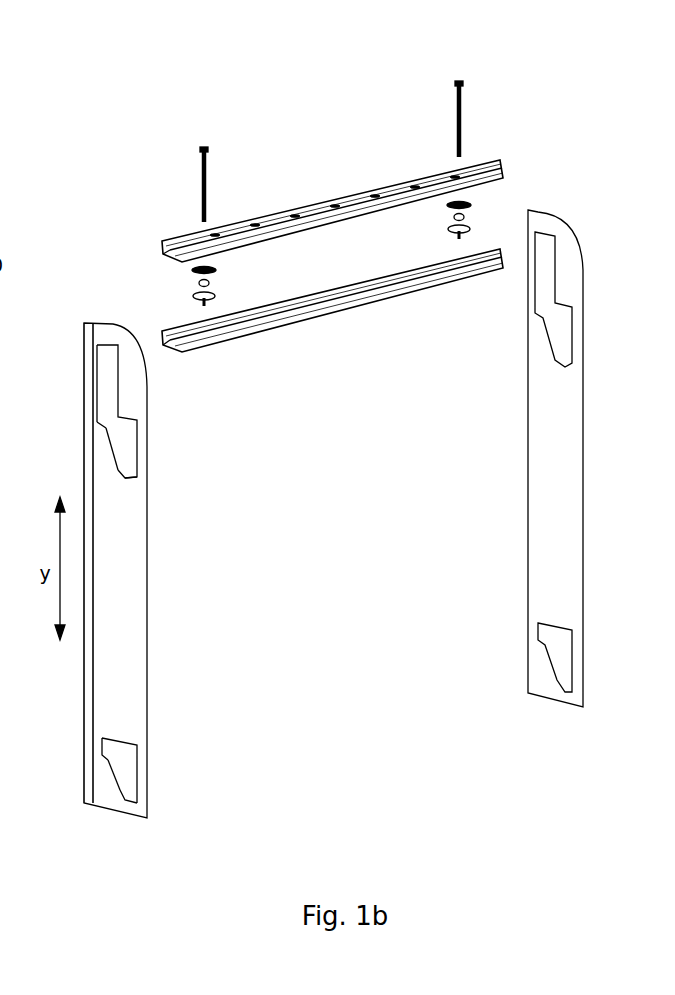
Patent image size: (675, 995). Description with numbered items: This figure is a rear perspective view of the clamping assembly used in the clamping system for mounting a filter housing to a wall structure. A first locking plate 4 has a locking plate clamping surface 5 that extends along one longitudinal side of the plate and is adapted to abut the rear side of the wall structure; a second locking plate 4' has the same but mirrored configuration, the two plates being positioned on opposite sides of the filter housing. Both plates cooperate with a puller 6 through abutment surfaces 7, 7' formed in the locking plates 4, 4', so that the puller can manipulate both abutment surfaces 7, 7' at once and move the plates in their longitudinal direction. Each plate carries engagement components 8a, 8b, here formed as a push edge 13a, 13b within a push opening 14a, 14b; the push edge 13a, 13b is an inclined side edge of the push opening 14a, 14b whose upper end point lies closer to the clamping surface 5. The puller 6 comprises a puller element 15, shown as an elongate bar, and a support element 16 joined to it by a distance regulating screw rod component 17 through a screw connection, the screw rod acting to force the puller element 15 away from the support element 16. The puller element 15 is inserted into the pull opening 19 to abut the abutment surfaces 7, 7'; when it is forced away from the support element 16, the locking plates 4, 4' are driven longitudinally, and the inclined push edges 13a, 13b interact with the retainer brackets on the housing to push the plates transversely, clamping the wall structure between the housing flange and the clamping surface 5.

The first locking plate 4 is at (154, 570).
The second locking plate 4' is at (591, 450).
The locking plate clamping surface 5 is at (78, 731).
The puller 6 is at (134, 284).
The abutment surface 7 is at (160, 411).
The abutment surface 7' is at (574, 280).
The engagement component 8a is at (122, 467).
The engagement component 8b is at (118, 785).
The push edge 13a is at (110, 446).
The push edge 13b is at (115, 768).
The push opening 14a is at (120, 438).
The push opening 14b is at (123, 760).
The puller element 15 is at (278, 212).
The support element 16 is at (327, 303).
The distance regulating screw rod component 17 is at (463, 113).
The pull opening 19 is at (108, 383).